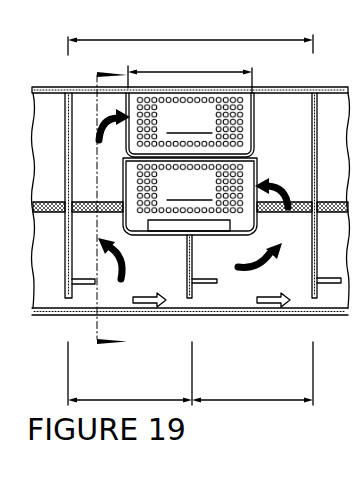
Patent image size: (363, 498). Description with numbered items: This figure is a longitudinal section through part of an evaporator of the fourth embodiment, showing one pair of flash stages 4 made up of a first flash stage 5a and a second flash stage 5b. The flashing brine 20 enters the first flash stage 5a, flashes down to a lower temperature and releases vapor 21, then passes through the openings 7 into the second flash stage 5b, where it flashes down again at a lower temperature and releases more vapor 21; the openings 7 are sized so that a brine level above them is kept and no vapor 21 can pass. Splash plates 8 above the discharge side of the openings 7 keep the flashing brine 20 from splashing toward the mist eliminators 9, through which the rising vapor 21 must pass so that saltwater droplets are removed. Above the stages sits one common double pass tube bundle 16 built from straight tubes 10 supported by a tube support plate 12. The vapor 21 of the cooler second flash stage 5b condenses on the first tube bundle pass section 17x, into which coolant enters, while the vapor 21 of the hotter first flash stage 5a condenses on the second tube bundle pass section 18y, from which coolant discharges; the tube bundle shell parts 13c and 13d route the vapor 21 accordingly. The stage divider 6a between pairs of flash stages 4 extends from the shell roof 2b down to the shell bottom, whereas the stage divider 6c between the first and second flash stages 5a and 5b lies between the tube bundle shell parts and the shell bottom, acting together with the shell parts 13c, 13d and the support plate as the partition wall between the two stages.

The shell roof 2b is at (43, 87).
The pair of flash stages 4 is at (188, 40).
The common double pass tube bundle 16 is at (178, 72).
The flashing brine 20 is at (265, 318).
The tube support plate 12 is at (252, 98).
The straight tubes 10 is at (240, 107).
The second tube bundle pass section 18y is at (190, 122).
The first tube bundle pass section 17x is at (190, 189).
The tube bundle shell part 13c is at (118, 188).
The tube bundle shell part 13d is at (257, 127).
The mist eliminators 9 is at (110, 213).
The splash plates 8 is at (345, 279).
The stage divider 6a is at (65, 272).
The stage divider 6c is at (187, 267).
The openings 7 is at (316, 299).
The vapor 21 is at (247, 269).
The first flash stage 5a is at (122, 400).
The second flash stage 5b is at (230, 400).